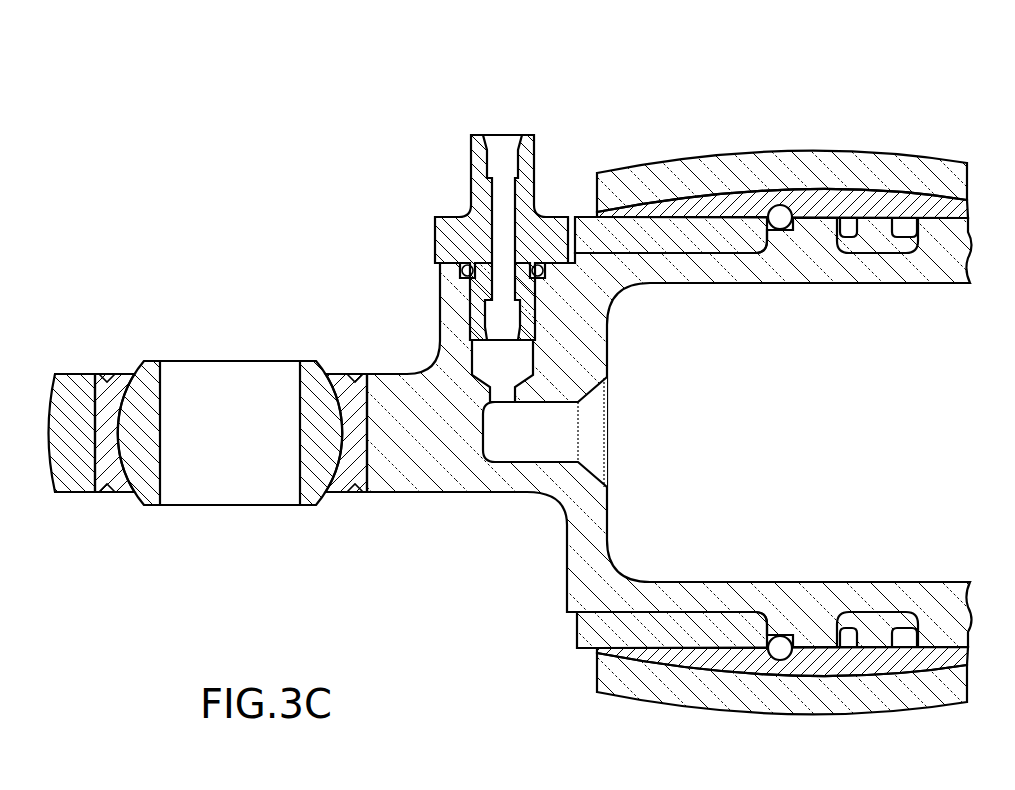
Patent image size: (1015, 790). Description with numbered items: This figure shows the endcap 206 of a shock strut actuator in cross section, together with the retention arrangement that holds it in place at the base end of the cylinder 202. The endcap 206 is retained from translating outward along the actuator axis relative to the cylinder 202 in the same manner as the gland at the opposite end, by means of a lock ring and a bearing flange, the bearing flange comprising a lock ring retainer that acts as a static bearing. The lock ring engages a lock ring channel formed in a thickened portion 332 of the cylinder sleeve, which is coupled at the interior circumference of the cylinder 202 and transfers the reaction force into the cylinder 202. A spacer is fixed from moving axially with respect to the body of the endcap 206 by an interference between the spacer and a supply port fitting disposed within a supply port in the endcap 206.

The endcap 206 is at (300, 118).
The cylinder 202 is at (888, 160).
The thickened portion 332 is at (930, 200).